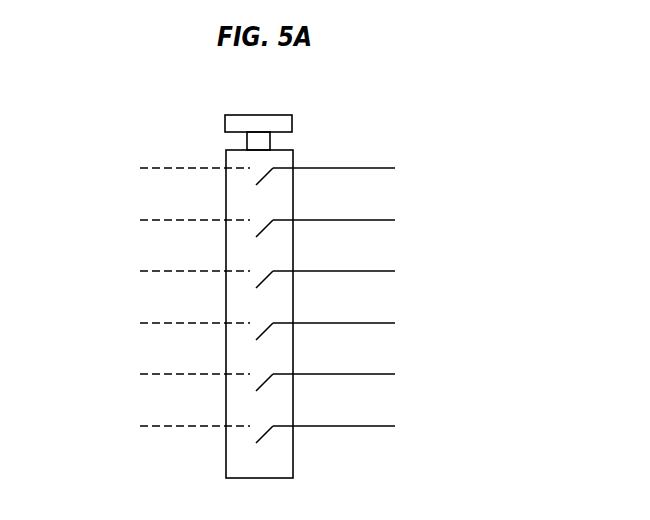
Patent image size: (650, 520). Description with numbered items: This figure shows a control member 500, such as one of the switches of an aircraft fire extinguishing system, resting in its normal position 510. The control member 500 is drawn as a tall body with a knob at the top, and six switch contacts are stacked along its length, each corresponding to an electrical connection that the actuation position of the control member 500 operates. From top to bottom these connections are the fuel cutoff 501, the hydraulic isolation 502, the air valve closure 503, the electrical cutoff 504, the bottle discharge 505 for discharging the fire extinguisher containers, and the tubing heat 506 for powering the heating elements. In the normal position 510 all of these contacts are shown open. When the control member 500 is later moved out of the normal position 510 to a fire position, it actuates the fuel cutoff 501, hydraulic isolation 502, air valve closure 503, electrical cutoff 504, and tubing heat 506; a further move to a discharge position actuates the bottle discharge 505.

The control member 500 is at (233, 115).
The fuel cutoff 501 is at (385, 168).
The hydraulic isolation 502 is at (385, 220).
The air valve closure 503 is at (385, 271).
The electrical cutoff 504 is at (385, 323).
The bottle discharge 505 is at (385, 374).
The tubing heat 506 is at (385, 426).
The normal position 510 is at (95, 256).